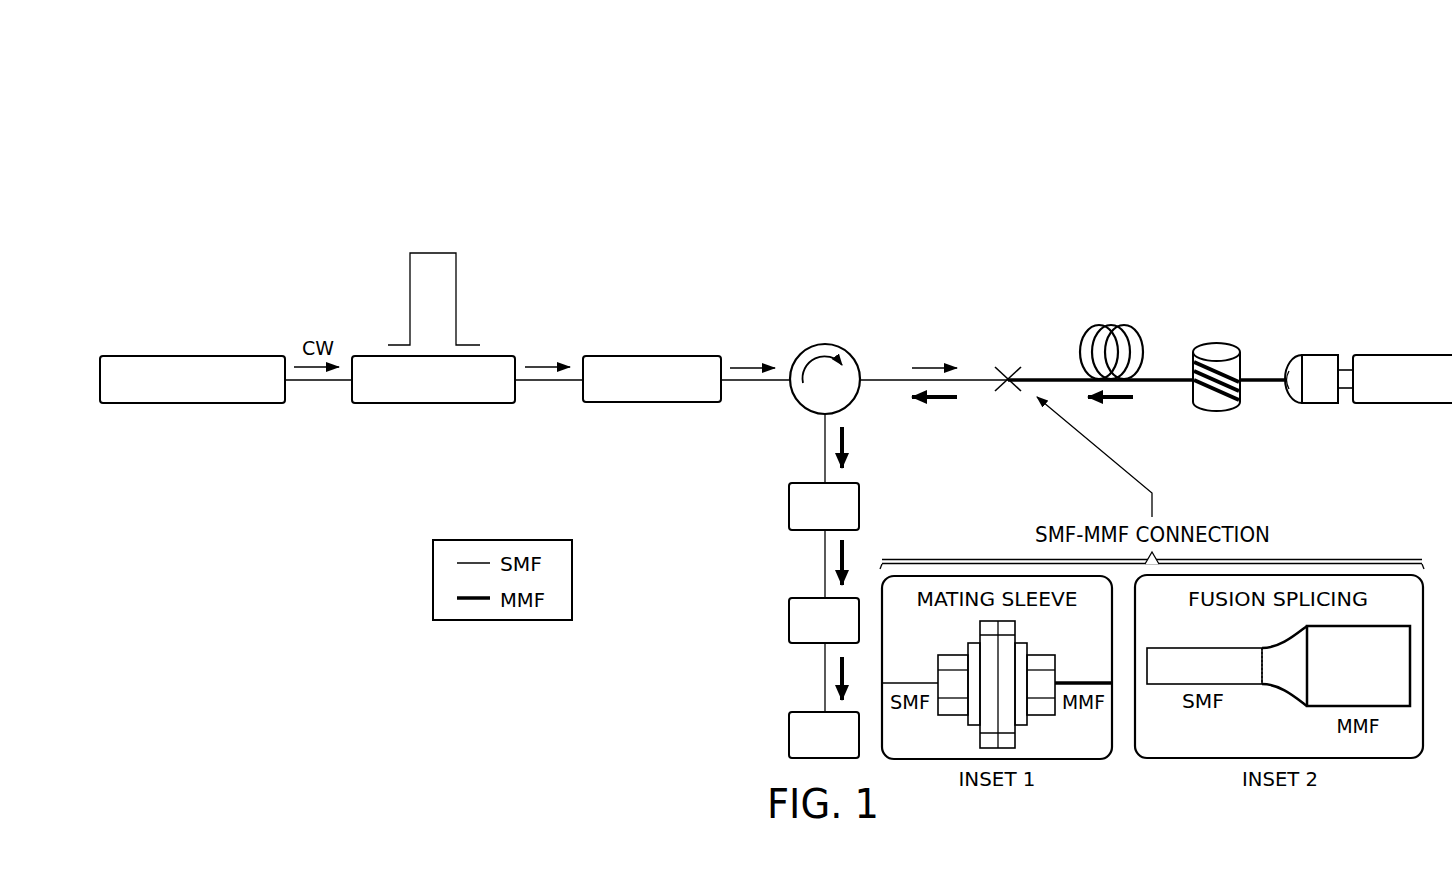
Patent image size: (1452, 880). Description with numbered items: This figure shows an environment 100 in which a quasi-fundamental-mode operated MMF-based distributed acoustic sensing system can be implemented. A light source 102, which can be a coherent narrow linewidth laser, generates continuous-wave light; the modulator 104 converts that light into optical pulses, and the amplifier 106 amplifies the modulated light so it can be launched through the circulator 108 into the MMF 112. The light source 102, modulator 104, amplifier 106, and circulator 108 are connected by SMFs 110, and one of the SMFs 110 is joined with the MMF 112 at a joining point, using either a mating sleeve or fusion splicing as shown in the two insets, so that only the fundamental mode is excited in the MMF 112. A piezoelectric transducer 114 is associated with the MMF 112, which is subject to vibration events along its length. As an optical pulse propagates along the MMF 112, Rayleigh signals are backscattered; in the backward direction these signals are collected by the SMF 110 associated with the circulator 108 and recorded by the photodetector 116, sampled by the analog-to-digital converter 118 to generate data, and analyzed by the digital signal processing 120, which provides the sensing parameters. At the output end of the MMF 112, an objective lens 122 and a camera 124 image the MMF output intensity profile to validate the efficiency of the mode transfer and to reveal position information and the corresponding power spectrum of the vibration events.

The environment 100 is at (971, 246).
The light source 102 is at (192, 404).
The modulator 104 is at (433, 404).
The amplifier 106 is at (651, 403).
The circulator 108 is at (792, 396).
The SMF 110 is at (970, 400).
The MMF 112 is at (1080, 346).
The piezoelectric transducer (PZT) 114 is at (1213, 414).
The photodetector (PD) 116 is at (789, 505).
The analog-to-digital converter (ADC) 118 is at (789, 620).
The digital signal processing (DSP) 120 is at (789, 735).
The objective lens 122 is at (1318, 406).
The camera 124 is at (1410, 406).